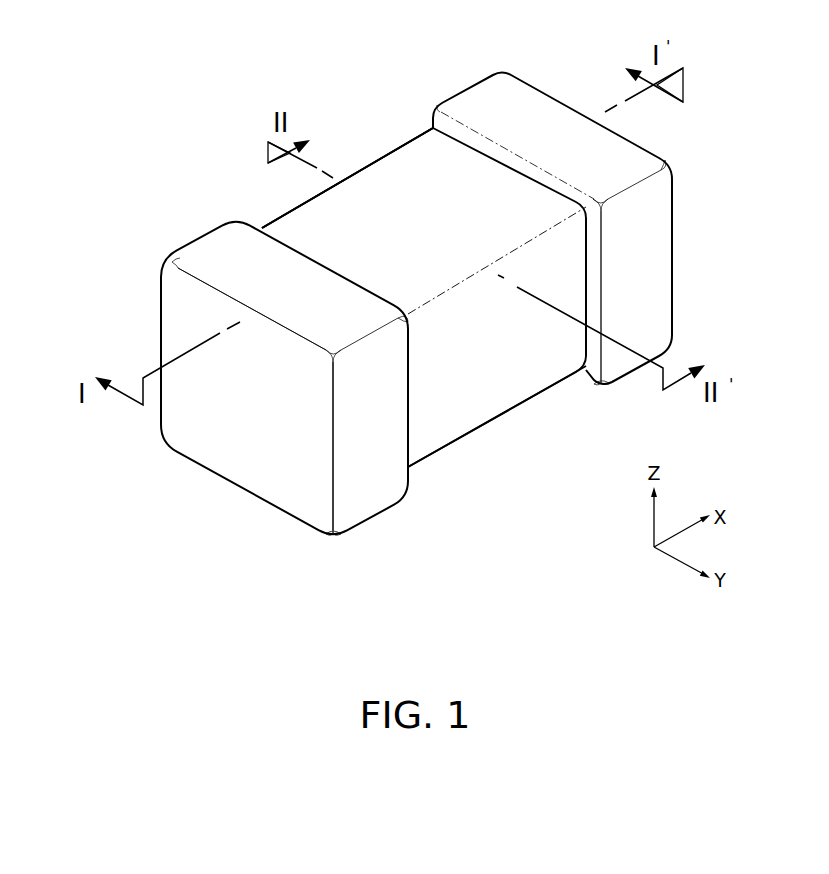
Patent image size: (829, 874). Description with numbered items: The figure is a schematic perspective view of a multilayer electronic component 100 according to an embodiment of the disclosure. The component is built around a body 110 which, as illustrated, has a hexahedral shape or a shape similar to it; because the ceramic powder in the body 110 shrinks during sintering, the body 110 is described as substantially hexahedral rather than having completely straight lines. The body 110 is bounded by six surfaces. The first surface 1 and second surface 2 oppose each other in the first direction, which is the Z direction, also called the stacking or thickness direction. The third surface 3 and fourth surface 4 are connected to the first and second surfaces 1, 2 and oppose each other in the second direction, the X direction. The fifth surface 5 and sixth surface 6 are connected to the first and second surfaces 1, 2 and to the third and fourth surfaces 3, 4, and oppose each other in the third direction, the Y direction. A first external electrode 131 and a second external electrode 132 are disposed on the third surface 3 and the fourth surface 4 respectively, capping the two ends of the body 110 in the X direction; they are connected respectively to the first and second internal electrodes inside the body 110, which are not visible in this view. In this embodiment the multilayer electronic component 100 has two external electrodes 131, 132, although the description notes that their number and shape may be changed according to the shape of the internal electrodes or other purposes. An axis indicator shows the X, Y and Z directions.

The multilayer electronic component 100 is at (201, 37).
The body 110 is at (296, 236).
The first external electrode 131 is at (218, 250).
The second external electrode 132 is at (475, 105).
The first surface 1 is at (459, 393).
The second surface 2 is at (428, 178).
The third surface 3 is at (251, 437).
The fourth surface 4 is at (626, 241).
The fifth surface 5 is at (518, 361).
The sixth surface 6 is at (376, 203).